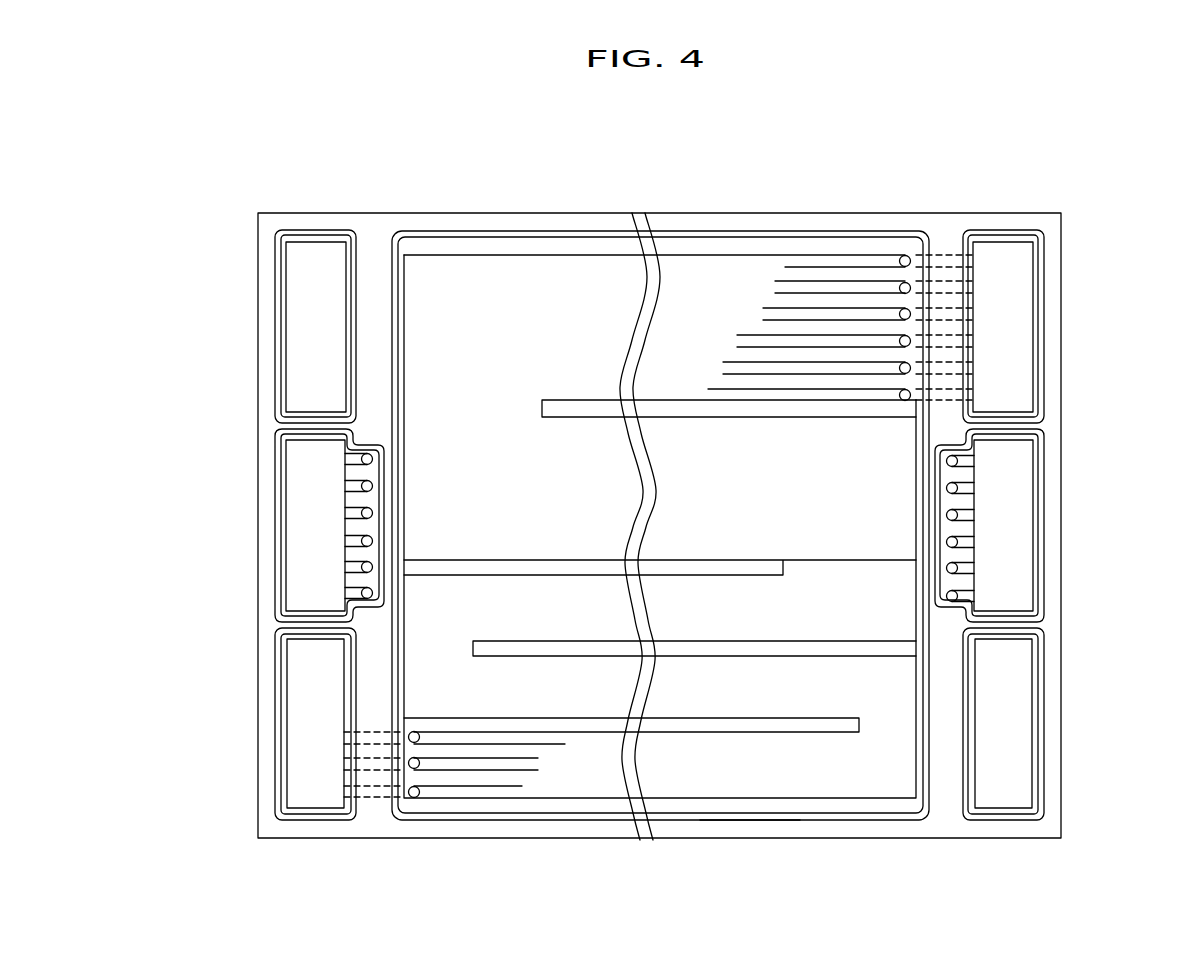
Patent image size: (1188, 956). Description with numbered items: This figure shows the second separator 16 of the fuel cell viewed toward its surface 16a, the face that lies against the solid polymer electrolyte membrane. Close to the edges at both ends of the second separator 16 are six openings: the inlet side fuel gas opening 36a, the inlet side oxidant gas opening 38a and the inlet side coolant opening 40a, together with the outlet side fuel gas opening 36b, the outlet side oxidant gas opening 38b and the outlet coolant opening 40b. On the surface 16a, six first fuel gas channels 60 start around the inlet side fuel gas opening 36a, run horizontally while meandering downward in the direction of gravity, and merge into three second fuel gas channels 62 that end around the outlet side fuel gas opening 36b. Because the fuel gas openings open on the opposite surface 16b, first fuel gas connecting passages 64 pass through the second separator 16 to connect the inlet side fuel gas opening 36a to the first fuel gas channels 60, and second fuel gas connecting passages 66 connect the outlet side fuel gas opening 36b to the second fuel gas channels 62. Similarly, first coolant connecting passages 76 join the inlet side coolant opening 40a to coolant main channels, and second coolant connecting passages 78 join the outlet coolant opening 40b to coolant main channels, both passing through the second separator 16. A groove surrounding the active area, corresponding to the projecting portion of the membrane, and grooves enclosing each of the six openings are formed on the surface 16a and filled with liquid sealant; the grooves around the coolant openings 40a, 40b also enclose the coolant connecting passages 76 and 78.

The second separator 16 is at (738, 208).
The surface of the second separator 16a is at (680, 228).
The surface of the second separator 16b is at (516, 233).
The inlet side fuel gas opening 36a is at (1008, 328).
The outlet side fuel gas opening 36b is at (308, 708).
The inlet side oxidant gas opening 38a is at (305, 328).
The outlet side oxidant gas opening 38b is at (1013, 716).
The inlet side coolant opening 40a is at (1010, 530).
The outlet side coolant opening 40b is at (312, 527).
The first fuel gas channels 60 is at (852, 283).
The second fuel gas channels 62 is at (467, 768).
The first fuel gas connecting passages 64 is at (899, 284).
The second fuel gas connecting passages 66 is at (421, 766).
The first coolant connecting passages 76 is at (946, 489).
The second coolant connecting passages 78 is at (373, 460).